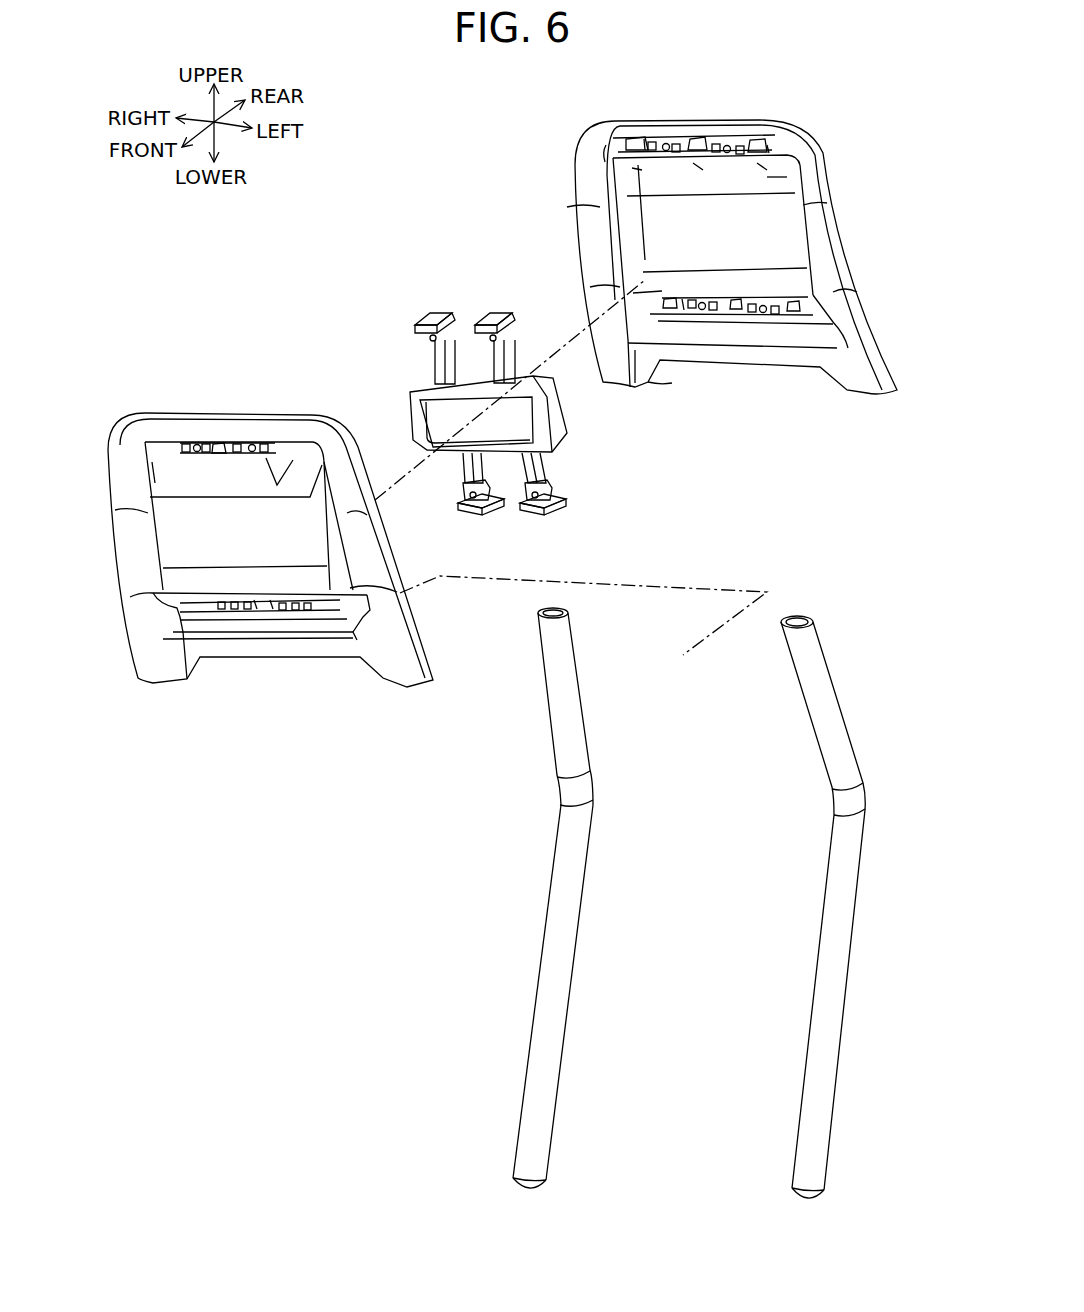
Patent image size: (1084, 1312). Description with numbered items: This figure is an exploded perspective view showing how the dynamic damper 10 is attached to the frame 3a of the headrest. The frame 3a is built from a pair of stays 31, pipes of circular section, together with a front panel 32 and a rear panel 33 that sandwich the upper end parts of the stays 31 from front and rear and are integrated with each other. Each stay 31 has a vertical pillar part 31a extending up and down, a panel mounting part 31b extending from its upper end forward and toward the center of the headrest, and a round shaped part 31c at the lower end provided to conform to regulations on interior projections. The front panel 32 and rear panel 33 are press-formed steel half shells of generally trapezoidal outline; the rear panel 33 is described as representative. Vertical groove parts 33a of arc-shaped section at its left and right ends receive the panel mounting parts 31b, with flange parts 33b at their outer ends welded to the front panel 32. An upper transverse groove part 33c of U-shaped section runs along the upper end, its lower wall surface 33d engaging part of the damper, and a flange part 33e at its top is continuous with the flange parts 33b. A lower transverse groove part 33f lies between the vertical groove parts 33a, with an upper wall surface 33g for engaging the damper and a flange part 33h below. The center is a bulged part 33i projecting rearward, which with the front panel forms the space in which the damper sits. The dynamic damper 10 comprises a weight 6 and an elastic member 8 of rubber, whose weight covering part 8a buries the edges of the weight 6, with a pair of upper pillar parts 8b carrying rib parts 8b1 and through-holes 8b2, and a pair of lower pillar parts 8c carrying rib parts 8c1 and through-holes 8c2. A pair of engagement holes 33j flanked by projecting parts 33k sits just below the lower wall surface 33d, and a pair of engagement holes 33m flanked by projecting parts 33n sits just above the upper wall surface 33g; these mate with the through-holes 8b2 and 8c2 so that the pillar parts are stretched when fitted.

The frame 3a is at (428, 150).
The dynamic damper 10 is at (448, 280).
The weight 6 is at (447, 420).
The elastic member 8 is at (487, 410).
The weight covering part 8a is at (420, 412).
The upper pillar parts 8b is at (454, 322).
The rib parts 8b1 is at (430, 318).
The through-holes 8b2 is at (493, 334).
The lower pillar parts 8c is at (517, 506).
The rib parts 8c1 is at (472, 515).
The through-holes 8c2 is at (465, 497).
The stays 31 is at (624, 910).
The vertical pillar part 31a is at (535, 960).
The panel mounting part 31b is at (548, 722).
The round shaped part 31c is at (520, 1185).
The front panel 32 is at (220, 410).
The rear panel 33 is at (578, 138).
The vertical groove parts 33a is at (590, 240).
The flange parts 33b is at (832, 196).
The upper transverse groove part 33c is at (755, 137).
The lower wall surface 33d is at (645, 135).
The flange part 33e is at (770, 121).
The lower transverse groove part 33f is at (783, 340).
The upper wall surface 33g is at (690, 318).
The flange part 33h is at (763, 368).
The bulged part 33i is at (653, 223).
The engagement holes 33j is at (727, 146).
The projecting parts 33k is at (655, 156).
The engagement holes 33m is at (762, 313).
The projecting parts 33n is at (716, 303).